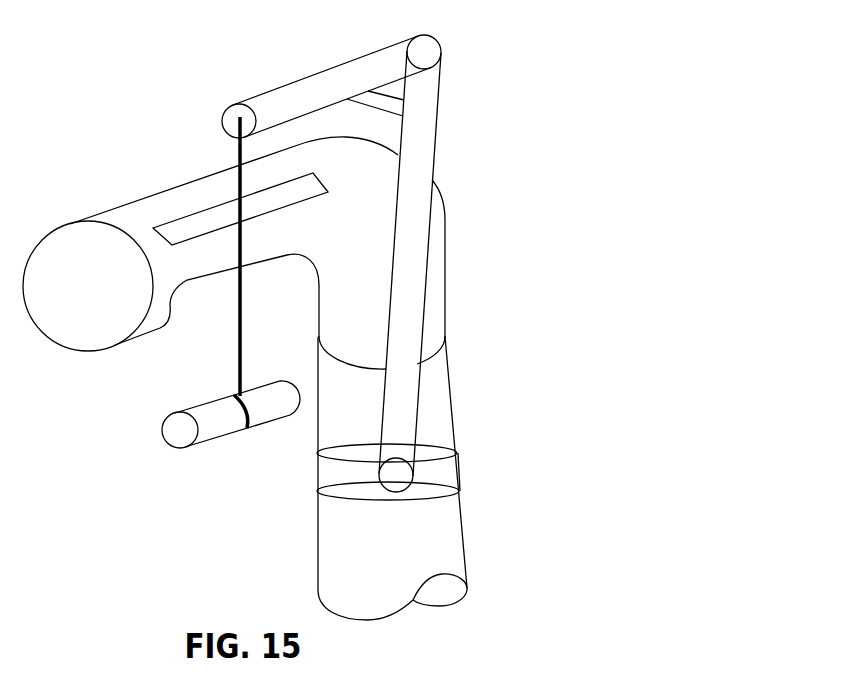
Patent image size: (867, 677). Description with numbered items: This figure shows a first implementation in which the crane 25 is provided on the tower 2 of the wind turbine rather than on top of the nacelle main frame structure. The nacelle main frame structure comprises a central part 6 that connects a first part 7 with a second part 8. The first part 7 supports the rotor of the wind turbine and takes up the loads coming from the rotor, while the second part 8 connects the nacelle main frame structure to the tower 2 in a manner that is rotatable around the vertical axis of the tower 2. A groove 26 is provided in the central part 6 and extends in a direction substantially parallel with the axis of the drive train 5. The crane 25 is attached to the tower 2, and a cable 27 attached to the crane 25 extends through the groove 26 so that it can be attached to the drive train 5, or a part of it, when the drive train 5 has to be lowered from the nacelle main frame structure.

The tower 2 is at (437, 408).
The drive train 5 is at (215, 425).
The central part 6 is at (222, 261).
The first part 7 is at (89, 313).
The second part 8 is at (353, 311).
The crane 25 is at (415, 128).
The groove 26 is at (203, 223).
The cable 27 is at (237, 327).